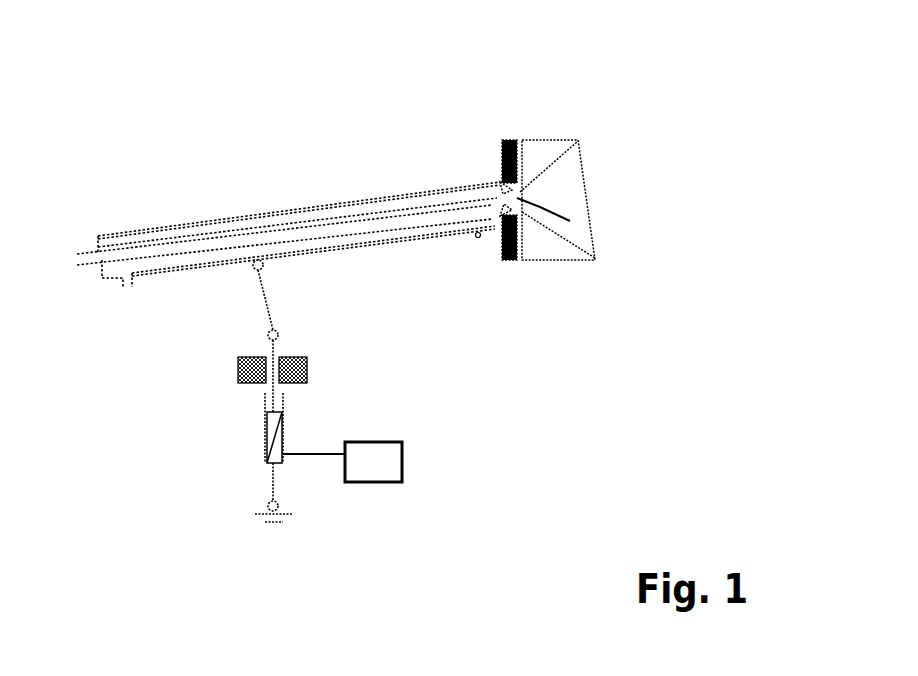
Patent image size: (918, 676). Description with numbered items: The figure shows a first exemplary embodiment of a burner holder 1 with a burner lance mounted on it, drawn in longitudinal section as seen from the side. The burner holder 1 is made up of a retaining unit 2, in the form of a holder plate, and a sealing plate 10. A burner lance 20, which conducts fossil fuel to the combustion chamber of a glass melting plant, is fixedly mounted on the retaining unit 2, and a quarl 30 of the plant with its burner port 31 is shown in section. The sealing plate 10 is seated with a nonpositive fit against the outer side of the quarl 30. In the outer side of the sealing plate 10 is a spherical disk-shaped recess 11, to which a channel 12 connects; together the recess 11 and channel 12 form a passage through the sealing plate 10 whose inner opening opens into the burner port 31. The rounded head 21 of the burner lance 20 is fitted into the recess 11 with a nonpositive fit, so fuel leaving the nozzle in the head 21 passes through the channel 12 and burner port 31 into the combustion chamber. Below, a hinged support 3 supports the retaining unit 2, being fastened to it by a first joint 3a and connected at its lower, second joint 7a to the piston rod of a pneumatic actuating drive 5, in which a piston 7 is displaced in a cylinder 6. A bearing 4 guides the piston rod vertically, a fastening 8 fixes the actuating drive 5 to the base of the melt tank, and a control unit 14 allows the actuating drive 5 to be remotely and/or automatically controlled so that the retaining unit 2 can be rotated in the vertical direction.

The burner holder 1 is at (545, 410).
The retaining unit 2 is at (360, 244).
The hinged support 3 is at (192, 336).
The first joint 3a is at (257, 270).
The bearing 4 is at (237, 375).
The actuating drive 5 is at (277, 453).
The cylinder 6 is at (265, 455).
The piston 7 is at (267, 437).
The second joint 7a is at (278, 337).
The fastening 8 is at (267, 505).
The sealing plate 10 is at (513, 140).
The recess 11 is at (498, 218).
The channel 12 is at (570, 221).
The control unit 14 is at (377, 482).
The burner lance 20 is at (355, 200).
The head of the burner lance 21 is at (503, 183).
The quarl 30 is at (619, 147).
The burner port 31 is at (568, 178).